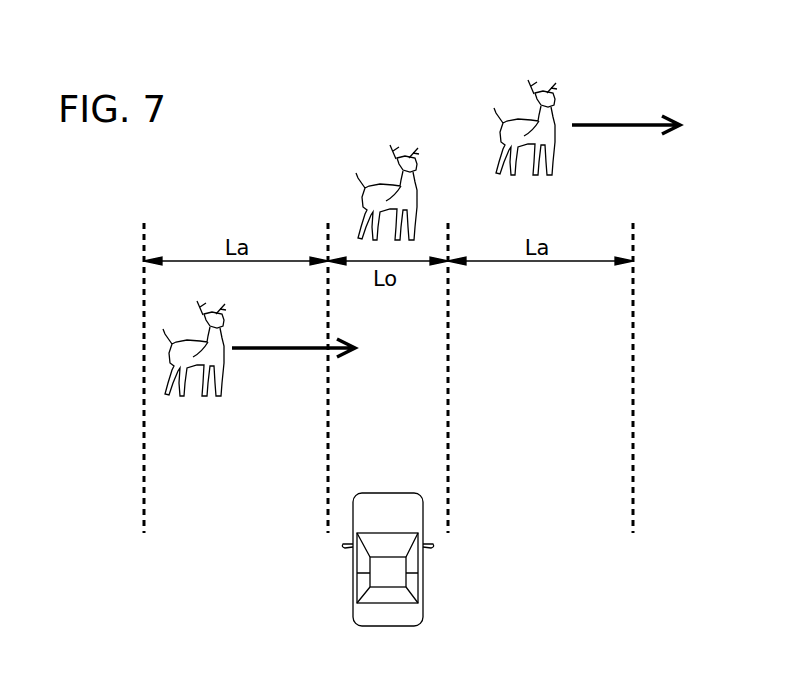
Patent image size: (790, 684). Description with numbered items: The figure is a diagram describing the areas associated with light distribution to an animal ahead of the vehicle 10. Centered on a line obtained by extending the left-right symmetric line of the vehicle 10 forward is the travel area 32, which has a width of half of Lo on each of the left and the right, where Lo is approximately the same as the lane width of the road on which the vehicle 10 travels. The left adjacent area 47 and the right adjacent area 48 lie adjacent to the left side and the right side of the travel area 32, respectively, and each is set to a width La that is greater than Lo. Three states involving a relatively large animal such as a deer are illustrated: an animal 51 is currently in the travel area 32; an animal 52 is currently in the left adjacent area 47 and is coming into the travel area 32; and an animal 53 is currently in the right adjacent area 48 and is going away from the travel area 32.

The vehicle 10 is at (423, 590).
The travel area 32 is at (432, 425).
The left adjacent area 47 is at (175, 438).
The right adjacent area 48 is at (597, 343).
The animal 51 is at (418, 142).
The animal 52 is at (175, 340).
The animal 53 is at (557, 77).